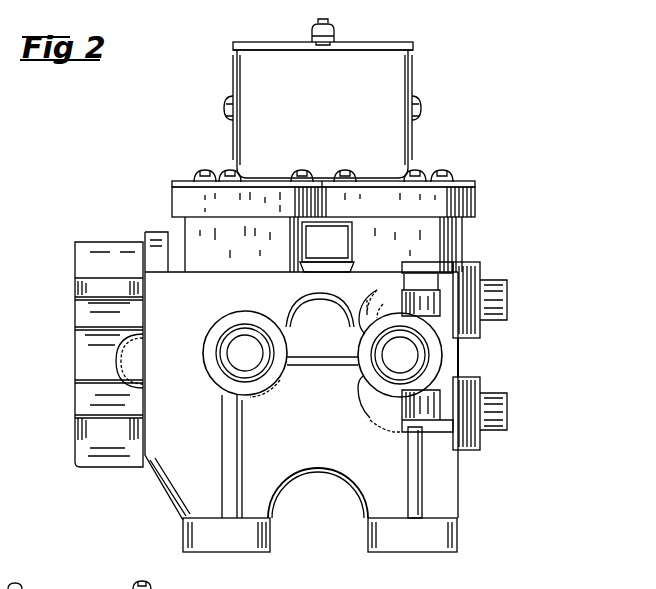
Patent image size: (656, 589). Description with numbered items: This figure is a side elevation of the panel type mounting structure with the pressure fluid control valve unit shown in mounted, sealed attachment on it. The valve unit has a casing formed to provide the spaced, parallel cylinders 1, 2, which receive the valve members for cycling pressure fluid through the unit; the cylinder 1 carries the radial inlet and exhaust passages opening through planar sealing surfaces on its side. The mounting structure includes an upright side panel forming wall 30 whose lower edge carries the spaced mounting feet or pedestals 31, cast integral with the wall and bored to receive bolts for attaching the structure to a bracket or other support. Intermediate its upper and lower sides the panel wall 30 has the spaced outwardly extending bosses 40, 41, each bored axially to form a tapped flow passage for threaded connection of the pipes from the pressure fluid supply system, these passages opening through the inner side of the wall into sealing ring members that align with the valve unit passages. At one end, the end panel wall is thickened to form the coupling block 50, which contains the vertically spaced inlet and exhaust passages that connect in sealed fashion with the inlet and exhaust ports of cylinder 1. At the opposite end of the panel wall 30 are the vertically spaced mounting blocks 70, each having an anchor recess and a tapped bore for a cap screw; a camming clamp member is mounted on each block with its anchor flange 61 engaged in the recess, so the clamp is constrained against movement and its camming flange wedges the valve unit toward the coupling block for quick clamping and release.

The cylinder 1 is at (188, 232).
The cylinder 2 is at (464, 233).
The side panel forming wall 30 is at (304, 444).
The mounting feet or pedestals 31 is at (374, 542).
The boss 40 is at (222, 382).
The boss 41 is at (370, 368).
The coupling block 50 is at (75, 320).
The anchor flange 61 is at (480, 262).
The mounting block 70 is at (441, 270).